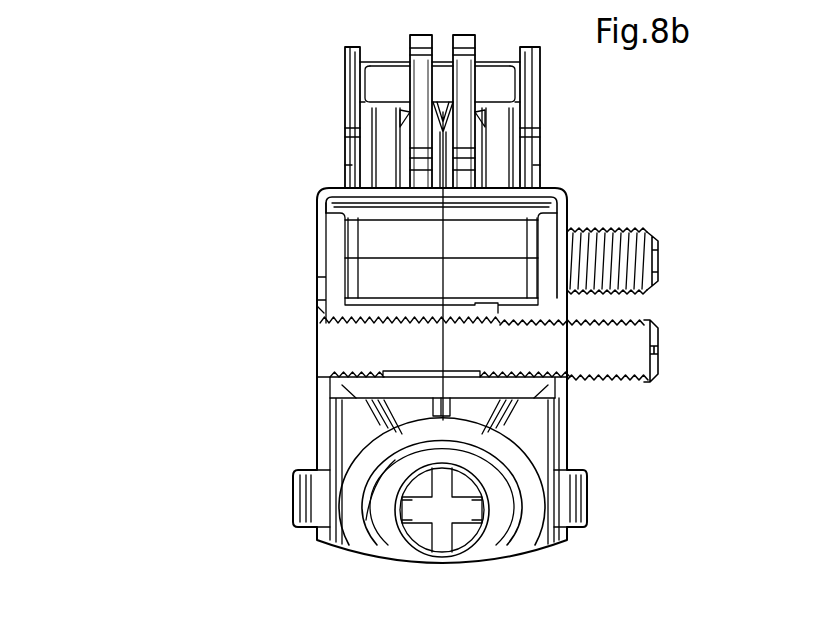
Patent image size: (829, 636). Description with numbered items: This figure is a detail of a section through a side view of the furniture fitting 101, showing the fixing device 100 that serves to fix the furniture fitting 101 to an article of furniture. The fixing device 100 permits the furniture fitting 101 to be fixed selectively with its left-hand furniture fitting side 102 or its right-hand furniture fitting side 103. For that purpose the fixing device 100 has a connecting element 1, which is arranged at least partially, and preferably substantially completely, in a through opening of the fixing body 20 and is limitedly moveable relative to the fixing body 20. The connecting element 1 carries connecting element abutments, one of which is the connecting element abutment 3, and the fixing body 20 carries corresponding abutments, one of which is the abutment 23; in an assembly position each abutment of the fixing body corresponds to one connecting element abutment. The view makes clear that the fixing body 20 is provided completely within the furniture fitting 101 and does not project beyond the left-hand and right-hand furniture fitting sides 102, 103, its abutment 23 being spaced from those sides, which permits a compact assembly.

The fixing device 100 is at (275, 361).
The furniture fitting 101 is at (292, 145).
The left-hand furniture fitting side 102 is at (568, 199).
The right-hand furniture fitting side 103 is at (317, 203).
The fixing body 20 is at (523, 305).
The connecting element 1 is at (459, 357).
The connecting element abutment 3 is at (458, 388).
The abutment 23 is at (432, 393).